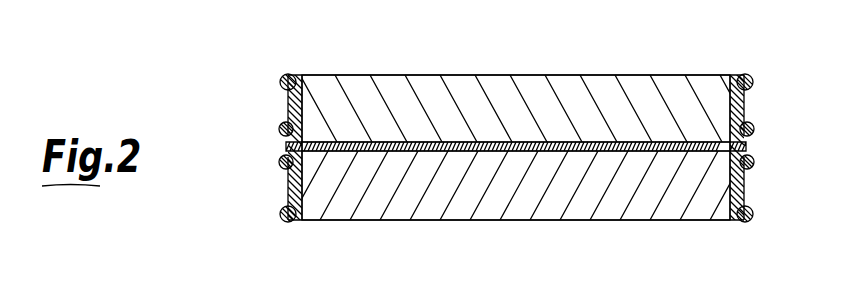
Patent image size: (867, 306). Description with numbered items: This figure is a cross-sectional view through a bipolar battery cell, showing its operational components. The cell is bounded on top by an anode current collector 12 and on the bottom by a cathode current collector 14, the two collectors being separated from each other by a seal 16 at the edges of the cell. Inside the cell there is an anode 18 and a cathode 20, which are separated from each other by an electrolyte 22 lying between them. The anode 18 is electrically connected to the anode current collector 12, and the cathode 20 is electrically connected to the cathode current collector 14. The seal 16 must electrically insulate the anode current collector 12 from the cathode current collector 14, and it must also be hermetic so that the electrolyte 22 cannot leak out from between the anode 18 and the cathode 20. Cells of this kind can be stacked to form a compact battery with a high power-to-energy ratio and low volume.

The anode current collector 12 is at (287, 93).
The cathode current collector 14 is at (288, 190).
The seal 16 is at (287, 148).
The anode 18 is at (402, 103).
The cathode 20 is at (475, 190).
The electrolyte 22 is at (522, 142).